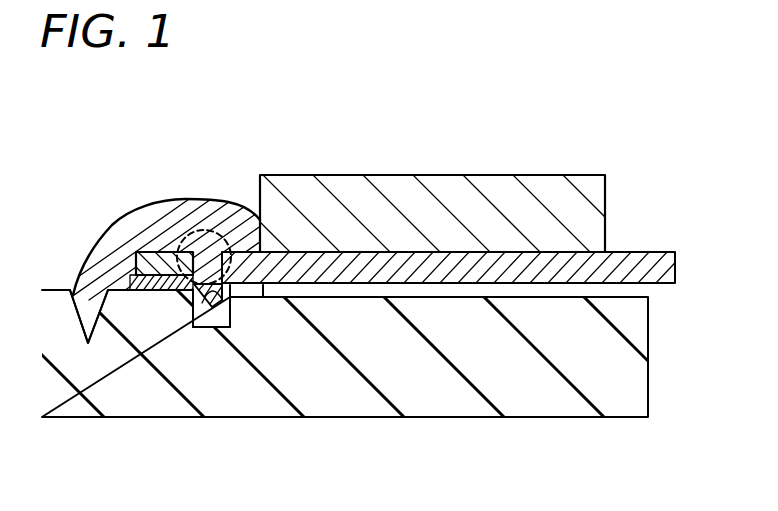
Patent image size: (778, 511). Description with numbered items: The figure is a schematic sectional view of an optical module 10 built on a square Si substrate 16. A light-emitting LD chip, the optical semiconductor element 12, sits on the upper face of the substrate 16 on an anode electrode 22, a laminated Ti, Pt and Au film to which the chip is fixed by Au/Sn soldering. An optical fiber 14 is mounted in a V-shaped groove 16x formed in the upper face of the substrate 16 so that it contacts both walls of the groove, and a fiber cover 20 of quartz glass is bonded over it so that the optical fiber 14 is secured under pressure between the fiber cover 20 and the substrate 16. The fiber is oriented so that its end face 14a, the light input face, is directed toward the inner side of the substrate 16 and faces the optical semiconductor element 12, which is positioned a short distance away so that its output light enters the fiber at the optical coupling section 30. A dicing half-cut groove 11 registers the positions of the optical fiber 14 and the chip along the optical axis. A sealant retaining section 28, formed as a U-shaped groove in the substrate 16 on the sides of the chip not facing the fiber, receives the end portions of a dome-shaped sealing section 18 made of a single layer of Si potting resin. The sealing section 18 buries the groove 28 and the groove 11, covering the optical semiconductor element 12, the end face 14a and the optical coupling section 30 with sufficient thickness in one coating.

The optical module 10 is at (613, 136).
The groove 11 is at (212, 302).
The optical semiconductor element 12 is at (163, 252).
The optical fiber 14 is at (652, 262).
The end face of the optical fiber 14a is at (210, 256).
The substrate 16 is at (637, 360).
The V-shaped groove 16x is at (538, 283).
The sealing section 18 is at (80, 285).
The fiber cover 20 is at (592, 205).
The anode electrode 22 is at (153, 292).
The sealant retaining section 28 is at (78, 302).
The optical coupling section 30 is at (234, 300).